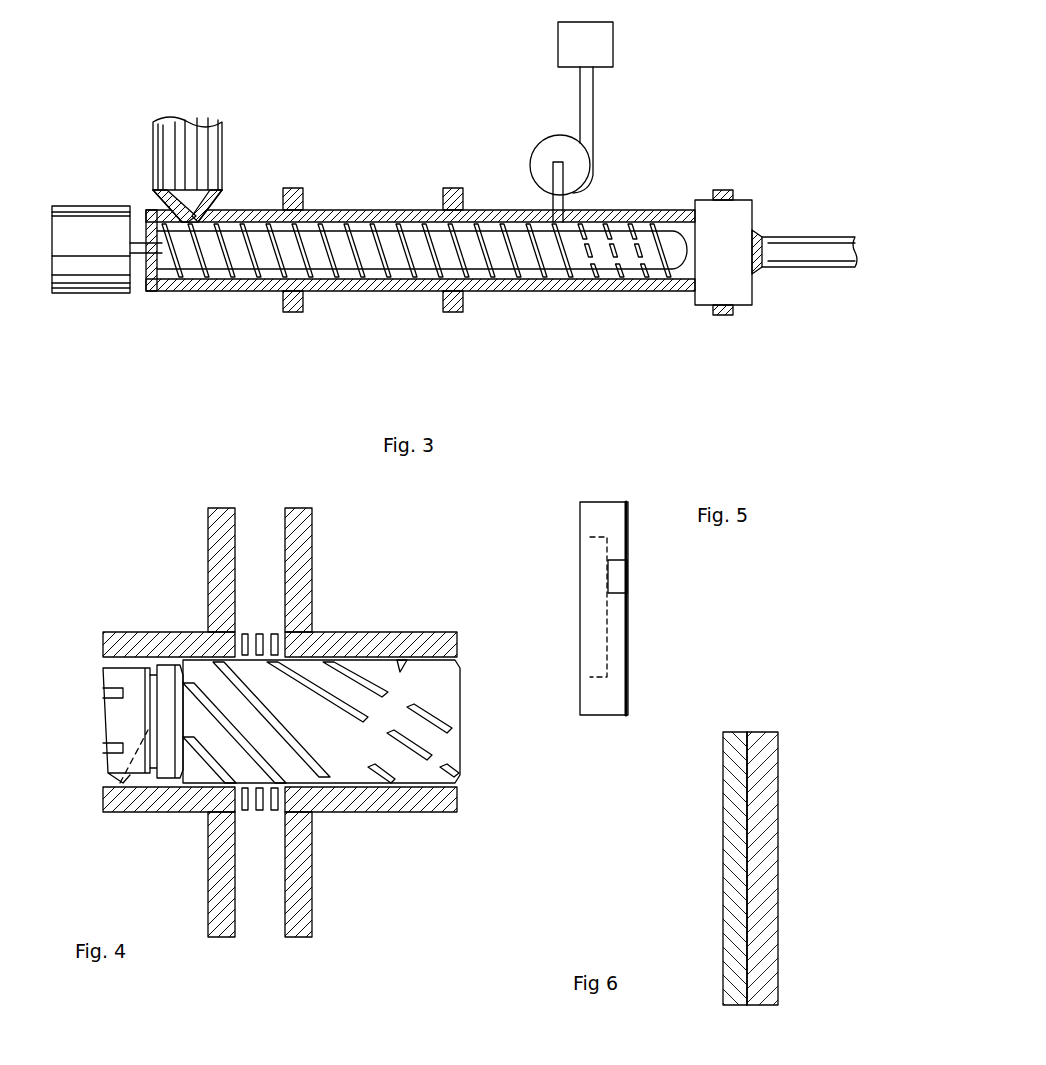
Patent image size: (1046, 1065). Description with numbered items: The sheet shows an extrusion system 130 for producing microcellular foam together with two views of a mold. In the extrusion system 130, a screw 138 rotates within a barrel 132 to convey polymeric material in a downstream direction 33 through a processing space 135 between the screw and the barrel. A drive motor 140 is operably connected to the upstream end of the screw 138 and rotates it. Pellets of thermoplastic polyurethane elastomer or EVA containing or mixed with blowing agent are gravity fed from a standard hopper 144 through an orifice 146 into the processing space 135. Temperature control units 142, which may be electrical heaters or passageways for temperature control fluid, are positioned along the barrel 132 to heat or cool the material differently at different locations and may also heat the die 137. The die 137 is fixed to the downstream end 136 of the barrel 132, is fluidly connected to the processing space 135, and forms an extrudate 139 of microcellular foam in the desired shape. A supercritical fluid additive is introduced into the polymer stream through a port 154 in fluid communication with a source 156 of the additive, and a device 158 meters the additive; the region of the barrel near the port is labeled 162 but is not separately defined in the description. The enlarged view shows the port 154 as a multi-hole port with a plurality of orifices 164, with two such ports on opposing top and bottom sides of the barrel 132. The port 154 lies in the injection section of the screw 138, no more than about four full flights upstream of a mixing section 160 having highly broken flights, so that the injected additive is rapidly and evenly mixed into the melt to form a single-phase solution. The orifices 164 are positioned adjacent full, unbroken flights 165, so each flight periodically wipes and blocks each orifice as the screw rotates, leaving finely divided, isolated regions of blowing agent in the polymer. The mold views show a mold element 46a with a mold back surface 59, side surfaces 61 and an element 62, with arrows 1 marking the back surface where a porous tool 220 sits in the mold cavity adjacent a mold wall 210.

In FIG. 3, the extrusion system 130 is at (288, 71).
In FIG. 3, the downstream direction 33 is at (421, 123).
In FIG. 3, the drive motor 140 is at (84, 205).
In FIG. 3, the barrel 132 is at (223, 292).
In FIG. 4, the barrel 132 is at (130, 812).
In FIG. 3, the hopper 144 is at (185, 135).
In FIG. 3, the orifice 146 is at (176, 190).
In FIG. 3, the temperature control units 142 is at (291, 187).
In FIG. 3, the processing space 135 is at (360, 215).
In FIG. 3, the screw 138 is at (388, 226).
In FIG. 4, the screw 138 is at (202, 670).
In FIG. 3, the mixing section 160 is at (648, 293).
In FIG. 4, the mixing section 160 is at (448, 815).
In FIG. 3, the vent region of barrel 162 is at (557, 287).
In FIG. 3, the port 154 is at (553, 213).
In FIG. 4, the port 154 is at (258, 832).
In FIG. 3, the metering device 158 is at (553, 157).
In FIG. 3, the source of supercritical fluid additive 156 is at (613, 42).
In FIG. 3, the die 137 is at (700, 200).
In FIG. 3, the downstream end of barrel 136 is at (668, 292).
In FIG. 3, the extrudate 139 is at (797, 237).
In FIG. 4, the orifices 164 is at (274, 632).
In FIG. 4, the full unbroken flights 165 is at (312, 737).
In FIG. 5, the plate 46a is at (605, 485).
In FIG. 5, the side surface 61 is at (592, 538).
In FIG. 5, the mold back surface 59 is at (600, 604).
In FIG. 5, the arrows 1 is at (668, 576).
In FIG. 6, the arrows 1 is at (686, 815).
In FIG. 5, the plate surface 62 is at (628, 668).
In FIG. 6, the mold wall 210 is at (760, 807).
In FIG. 6, the porous tool 220 is at (733, 893).